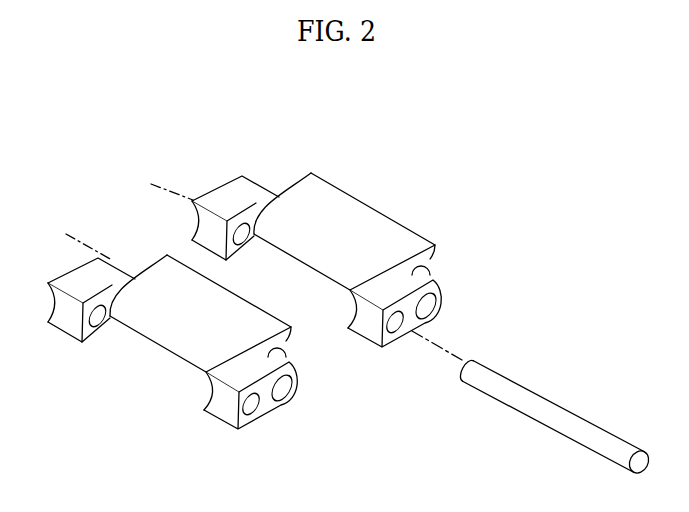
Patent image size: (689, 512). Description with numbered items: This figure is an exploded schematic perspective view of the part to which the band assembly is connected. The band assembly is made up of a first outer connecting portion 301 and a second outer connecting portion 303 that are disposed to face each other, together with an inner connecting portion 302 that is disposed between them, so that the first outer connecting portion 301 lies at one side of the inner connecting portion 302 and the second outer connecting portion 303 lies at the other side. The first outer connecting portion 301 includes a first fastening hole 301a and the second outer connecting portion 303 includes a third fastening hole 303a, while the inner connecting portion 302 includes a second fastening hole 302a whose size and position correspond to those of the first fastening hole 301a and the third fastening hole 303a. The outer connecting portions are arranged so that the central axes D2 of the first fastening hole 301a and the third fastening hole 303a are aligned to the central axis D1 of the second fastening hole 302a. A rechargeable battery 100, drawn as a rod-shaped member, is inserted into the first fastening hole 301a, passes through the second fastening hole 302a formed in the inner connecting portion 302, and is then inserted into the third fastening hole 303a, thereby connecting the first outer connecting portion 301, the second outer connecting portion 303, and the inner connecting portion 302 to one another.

The rechargeable battery 100 is at (553, 404).
The first outer connecting portion 301 is at (431, 272).
The first fastening hole 301a is at (390, 317).
The inner connecting portion 302 is at (366, 202).
The second fastening hole 302a is at (288, 352).
The second outer connecting portion 303 is at (243, 178).
The third fastening hole 303a is at (236, 229).
The central axis of the second fastening hole D1 is at (71, 235).
The central axes of the first and third fastening holes D2 is at (156, 178).